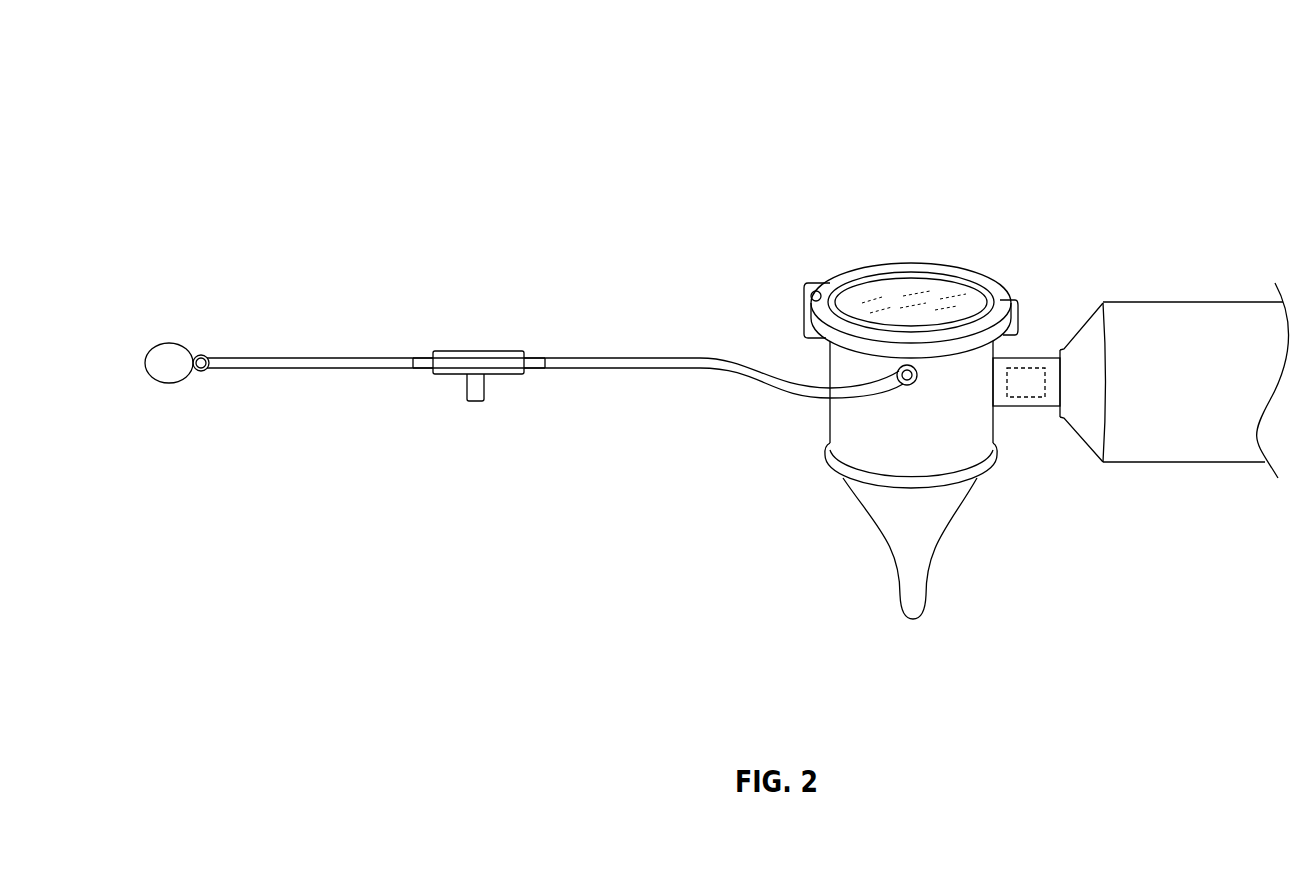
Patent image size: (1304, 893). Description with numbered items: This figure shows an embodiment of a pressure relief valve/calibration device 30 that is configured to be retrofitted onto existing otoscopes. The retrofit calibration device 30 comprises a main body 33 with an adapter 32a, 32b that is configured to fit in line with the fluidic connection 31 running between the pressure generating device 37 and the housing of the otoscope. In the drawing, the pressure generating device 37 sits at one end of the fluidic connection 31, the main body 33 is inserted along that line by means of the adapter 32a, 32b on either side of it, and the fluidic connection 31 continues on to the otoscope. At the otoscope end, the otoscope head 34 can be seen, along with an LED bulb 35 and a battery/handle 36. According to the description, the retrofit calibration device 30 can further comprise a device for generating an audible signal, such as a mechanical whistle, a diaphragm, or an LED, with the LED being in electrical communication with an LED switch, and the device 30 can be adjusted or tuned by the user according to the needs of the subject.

The retrofit calibration device 30 is at (793, 132).
The fluidic connection 31 is at (638, 344).
The adapter 32a is at (418, 377).
The adapter 32b is at (533, 377).
The main body 33 is at (468, 338).
The otoscope head 34 is at (916, 205).
The LED bulb 35 is at (1027, 380).
The battery/handle 36 is at (1174, 380).
The pressure generating device 37 is at (163, 366).